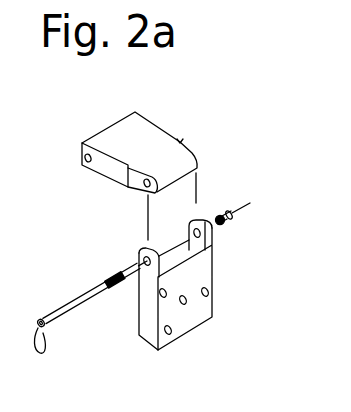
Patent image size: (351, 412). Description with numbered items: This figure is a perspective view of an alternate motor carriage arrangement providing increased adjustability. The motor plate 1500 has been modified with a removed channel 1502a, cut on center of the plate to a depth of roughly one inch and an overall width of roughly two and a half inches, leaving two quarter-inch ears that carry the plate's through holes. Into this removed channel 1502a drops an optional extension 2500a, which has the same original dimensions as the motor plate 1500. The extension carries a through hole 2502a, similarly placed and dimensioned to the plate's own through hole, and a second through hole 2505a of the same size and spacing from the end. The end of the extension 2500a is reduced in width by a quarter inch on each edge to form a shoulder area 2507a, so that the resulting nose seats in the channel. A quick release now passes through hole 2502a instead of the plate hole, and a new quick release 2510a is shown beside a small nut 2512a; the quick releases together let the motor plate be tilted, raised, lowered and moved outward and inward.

The optional extension 2500a is at (153, 126).
The through hole 2502a is at (83, 153).
The shoulder area 2507a is at (181, 141).
The through hole 2505a is at (147, 188).
The nut 2512a is at (218, 213).
The quick release 2510a is at (48, 327).
The motor plate 1500 is at (211, 272).
The removed channel 1502a is at (201, 234).